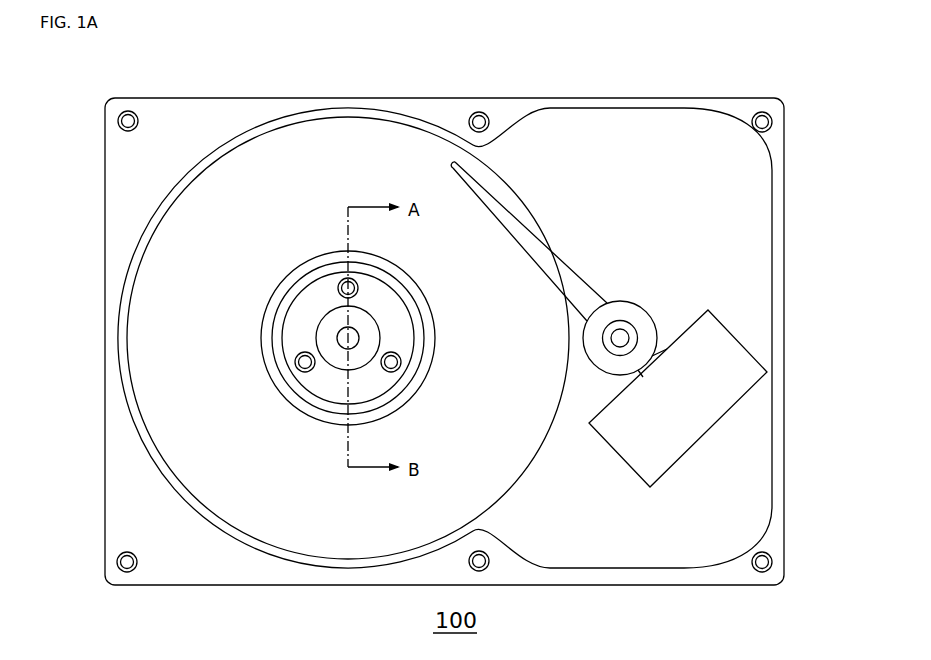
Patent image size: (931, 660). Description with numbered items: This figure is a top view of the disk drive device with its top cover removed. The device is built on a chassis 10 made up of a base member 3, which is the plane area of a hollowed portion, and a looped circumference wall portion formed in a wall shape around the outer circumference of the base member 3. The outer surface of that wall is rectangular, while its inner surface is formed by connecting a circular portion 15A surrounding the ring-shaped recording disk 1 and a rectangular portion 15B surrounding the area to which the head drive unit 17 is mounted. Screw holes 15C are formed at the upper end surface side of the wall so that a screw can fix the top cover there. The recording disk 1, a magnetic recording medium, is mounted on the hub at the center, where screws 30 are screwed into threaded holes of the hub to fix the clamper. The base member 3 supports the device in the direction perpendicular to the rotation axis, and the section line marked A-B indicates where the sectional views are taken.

The chassis 10 is at (795, 489).
The circular portion 15A is at (200, 98).
The rectangular portion 15B is at (778, 285).
The screw hole 15C is at (773, 122).
The base member 3 is at (575, 133).
The recording disk 1 is at (362, 148).
The screw 30 is at (340, 280).
The head drive unit 17 is at (722, 387).